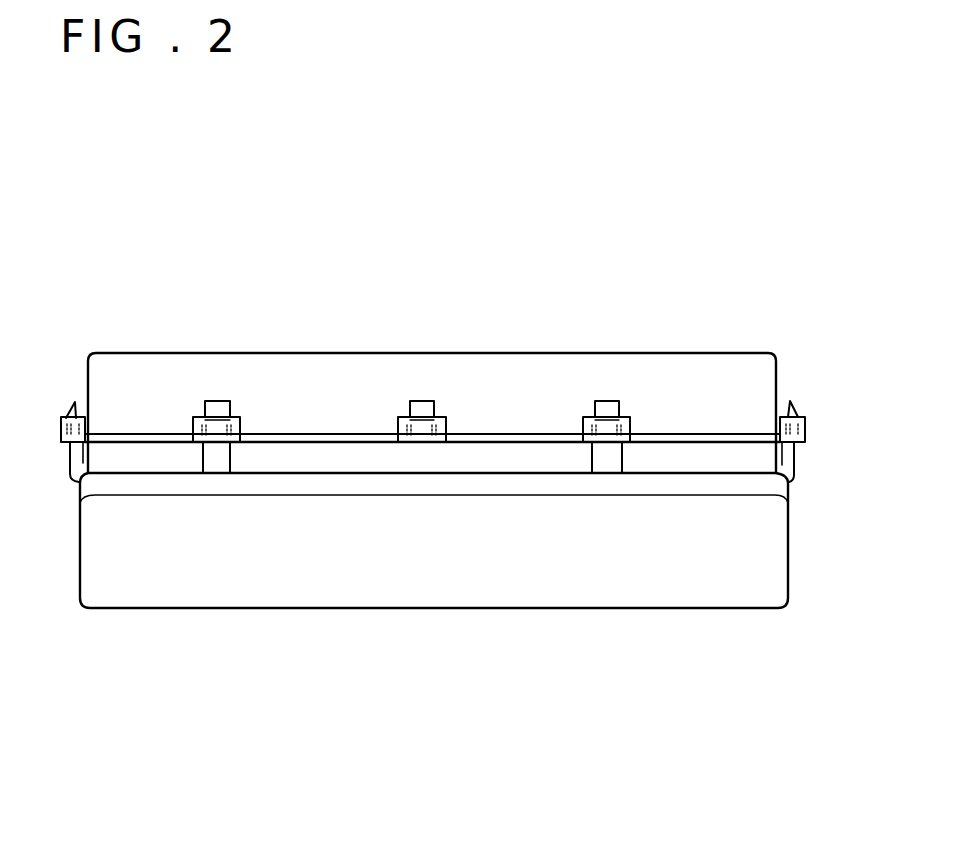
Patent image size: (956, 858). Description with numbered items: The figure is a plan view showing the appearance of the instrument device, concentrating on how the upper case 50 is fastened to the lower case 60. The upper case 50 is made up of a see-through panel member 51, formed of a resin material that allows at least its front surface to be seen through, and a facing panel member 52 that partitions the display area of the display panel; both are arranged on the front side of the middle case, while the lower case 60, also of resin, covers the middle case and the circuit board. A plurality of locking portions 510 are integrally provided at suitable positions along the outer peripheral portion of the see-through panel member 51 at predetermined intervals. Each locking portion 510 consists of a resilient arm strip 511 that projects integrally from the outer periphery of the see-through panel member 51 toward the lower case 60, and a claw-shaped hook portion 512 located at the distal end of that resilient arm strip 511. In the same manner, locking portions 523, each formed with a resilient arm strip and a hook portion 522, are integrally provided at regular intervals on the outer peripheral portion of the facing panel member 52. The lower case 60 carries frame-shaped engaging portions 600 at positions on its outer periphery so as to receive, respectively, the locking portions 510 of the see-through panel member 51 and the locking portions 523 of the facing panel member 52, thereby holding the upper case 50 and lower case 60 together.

The upper case 50 is at (434, 571).
The see-through panel member 51 is at (307, 577).
The facing panel member 52 is at (368, 460).
The lower case 60 is at (121, 356).
The locking portion 510 is at (60, 396).
The resilient arm strip 511 is at (219, 458).
The hook portion 512 is at (220, 402).
The hook portion 522 is at (419, 402).
The locking portion 523 is at (449, 398).
The frame-shaped engaging portion 600 is at (193, 426).